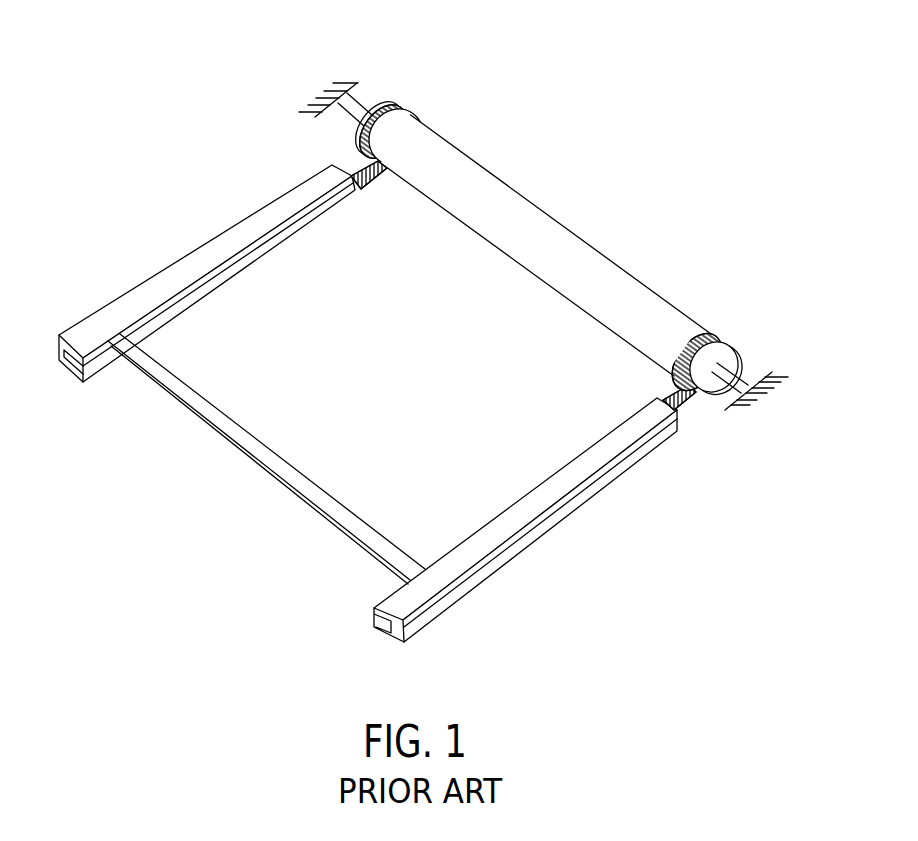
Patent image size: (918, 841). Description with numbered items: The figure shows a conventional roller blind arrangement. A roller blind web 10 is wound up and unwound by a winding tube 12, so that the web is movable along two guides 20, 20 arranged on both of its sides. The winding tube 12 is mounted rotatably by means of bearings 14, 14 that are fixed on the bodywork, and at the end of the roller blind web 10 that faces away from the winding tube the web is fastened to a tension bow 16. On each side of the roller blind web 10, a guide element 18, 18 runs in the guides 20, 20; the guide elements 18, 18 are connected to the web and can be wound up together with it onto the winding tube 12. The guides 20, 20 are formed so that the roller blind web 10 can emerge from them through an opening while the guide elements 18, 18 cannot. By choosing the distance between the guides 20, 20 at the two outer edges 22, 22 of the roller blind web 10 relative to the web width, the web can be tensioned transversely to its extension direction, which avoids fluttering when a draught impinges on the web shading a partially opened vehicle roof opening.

The roller blind web 10 is at (294, 459).
The winding tube 12 is at (712, 350).
The bearing 14 is at (343, 93).
The tension bow 16 is at (227, 430).
The guide element 18 is at (390, 104).
The guide 20 is at (197, 260).
The outer edge 22 is at (362, 170).